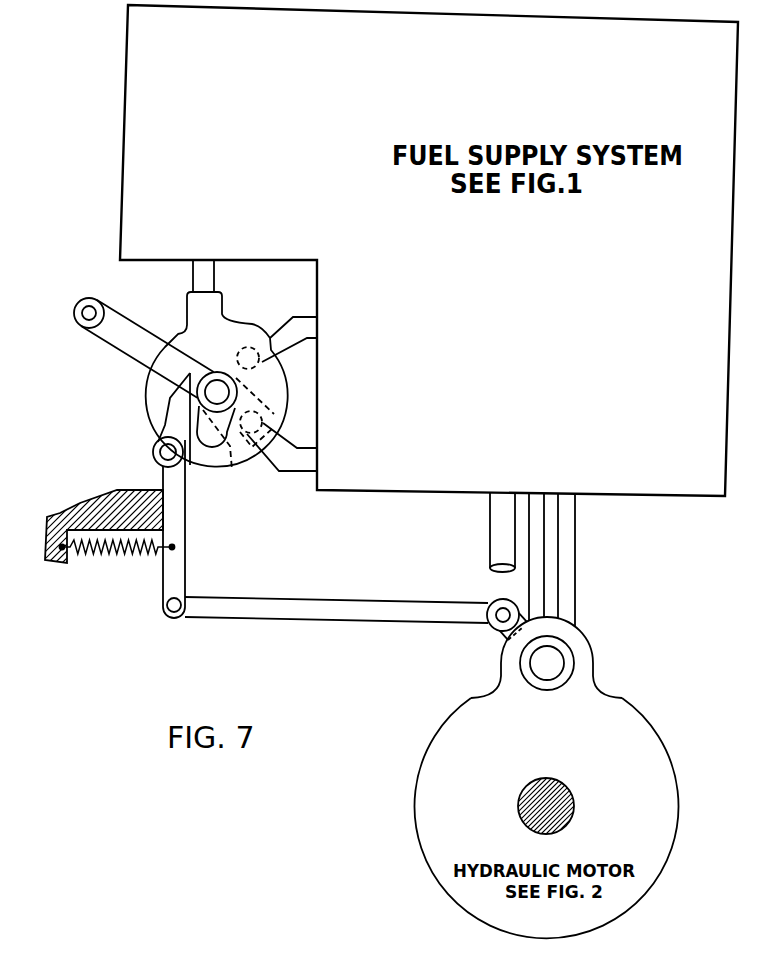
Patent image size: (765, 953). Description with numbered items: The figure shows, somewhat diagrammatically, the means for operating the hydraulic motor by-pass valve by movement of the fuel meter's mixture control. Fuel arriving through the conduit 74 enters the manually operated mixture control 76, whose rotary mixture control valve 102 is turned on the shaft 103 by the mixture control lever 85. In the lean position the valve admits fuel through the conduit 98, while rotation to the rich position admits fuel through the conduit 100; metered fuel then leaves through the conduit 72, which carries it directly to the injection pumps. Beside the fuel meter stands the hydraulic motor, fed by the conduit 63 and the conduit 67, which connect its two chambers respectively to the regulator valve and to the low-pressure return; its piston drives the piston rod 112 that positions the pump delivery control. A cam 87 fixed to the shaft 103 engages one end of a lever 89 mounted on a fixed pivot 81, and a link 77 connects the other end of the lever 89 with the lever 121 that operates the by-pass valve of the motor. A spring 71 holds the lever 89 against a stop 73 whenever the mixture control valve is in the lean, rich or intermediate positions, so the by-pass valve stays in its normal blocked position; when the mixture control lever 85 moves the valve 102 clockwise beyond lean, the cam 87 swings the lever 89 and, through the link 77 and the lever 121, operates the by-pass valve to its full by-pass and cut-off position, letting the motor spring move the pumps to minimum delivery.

The conduit 74 is at (214, 281).
The mixture control 76 is at (176, 328).
The conduit 98 is at (295, 322).
The mixture control lever 85 is at (120, 338).
The shaft 103 is at (218, 380).
The fixed pivot 81 is at (153, 451).
The cam 87 is at (204, 447).
The mixture control valve 102 is at (250, 450).
The conduit 100 is at (294, 473).
The stop 73 is at (167, 511).
The lever 89 is at (186, 523).
The spring 71 is at (128, 553).
The link 77 is at (248, 618).
The conduit 72 is at (490, 521).
The conduit 63 is at (529, 577).
The conduit 67 is at (575, 526).
The lever 121 is at (509, 634).
The piston rod 112 is at (573, 798).